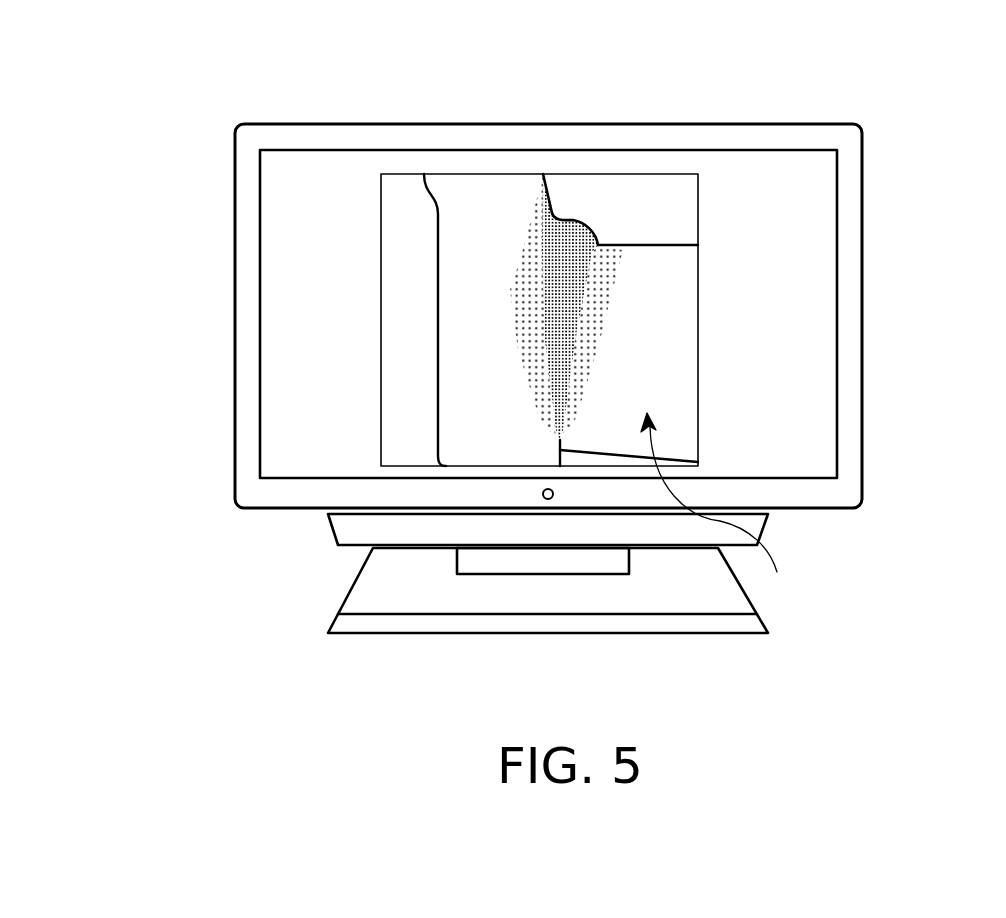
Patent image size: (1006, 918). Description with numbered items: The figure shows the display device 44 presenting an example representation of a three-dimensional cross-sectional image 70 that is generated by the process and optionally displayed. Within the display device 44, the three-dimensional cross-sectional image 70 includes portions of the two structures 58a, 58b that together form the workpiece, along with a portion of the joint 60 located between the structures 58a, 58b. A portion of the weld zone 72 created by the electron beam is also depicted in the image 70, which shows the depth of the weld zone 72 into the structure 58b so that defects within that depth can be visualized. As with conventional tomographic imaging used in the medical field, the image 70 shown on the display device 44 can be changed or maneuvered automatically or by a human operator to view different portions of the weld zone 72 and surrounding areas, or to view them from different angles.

The display device 44 is at (208, 331).
The structure 58a is at (642, 385).
The structure 58b is at (457, 417).
The joint 60 is at (553, 237).
The three-dimensional cross-sectional image 70 is at (716, 507).
The weld zone 72 is at (563, 318).